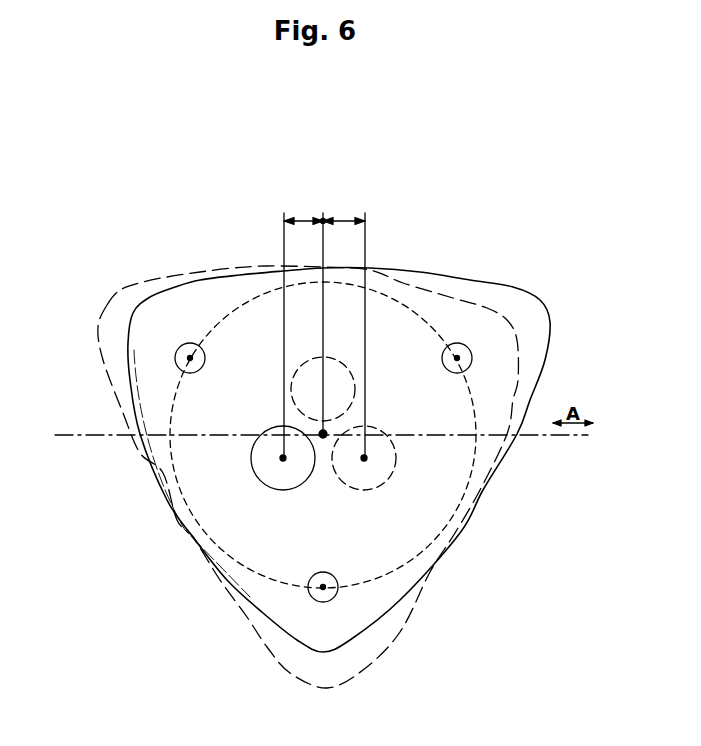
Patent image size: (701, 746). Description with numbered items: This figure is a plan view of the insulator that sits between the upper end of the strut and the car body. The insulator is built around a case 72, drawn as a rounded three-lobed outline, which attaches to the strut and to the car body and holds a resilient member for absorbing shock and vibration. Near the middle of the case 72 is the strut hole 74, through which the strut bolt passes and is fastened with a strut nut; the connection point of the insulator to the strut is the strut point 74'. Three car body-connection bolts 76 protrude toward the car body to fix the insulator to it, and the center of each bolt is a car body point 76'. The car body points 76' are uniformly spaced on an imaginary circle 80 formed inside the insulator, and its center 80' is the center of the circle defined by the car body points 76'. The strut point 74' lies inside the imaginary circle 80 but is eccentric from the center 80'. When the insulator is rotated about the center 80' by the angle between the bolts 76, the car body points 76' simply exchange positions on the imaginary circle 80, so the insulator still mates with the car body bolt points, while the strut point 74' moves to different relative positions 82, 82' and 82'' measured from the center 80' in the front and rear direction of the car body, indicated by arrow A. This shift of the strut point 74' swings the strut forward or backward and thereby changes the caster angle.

The case 72 is at (160, 450).
The strut hole 74 is at (213, 477).
The strut point 74' is at (268, 459).
The car body-connection bolts 76 is at (263, 619).
The car body points 76' is at (282, 633).
The imaginary circle 80 is at (363, 435).
The center of the imaginary circle 80' is at (421, 511).
The relative position of the strut point 82 is at (303, 327).
The relative position of the strut point 82' is at (332, 185).
The relative position of the strut point 82'' is at (344, 327).